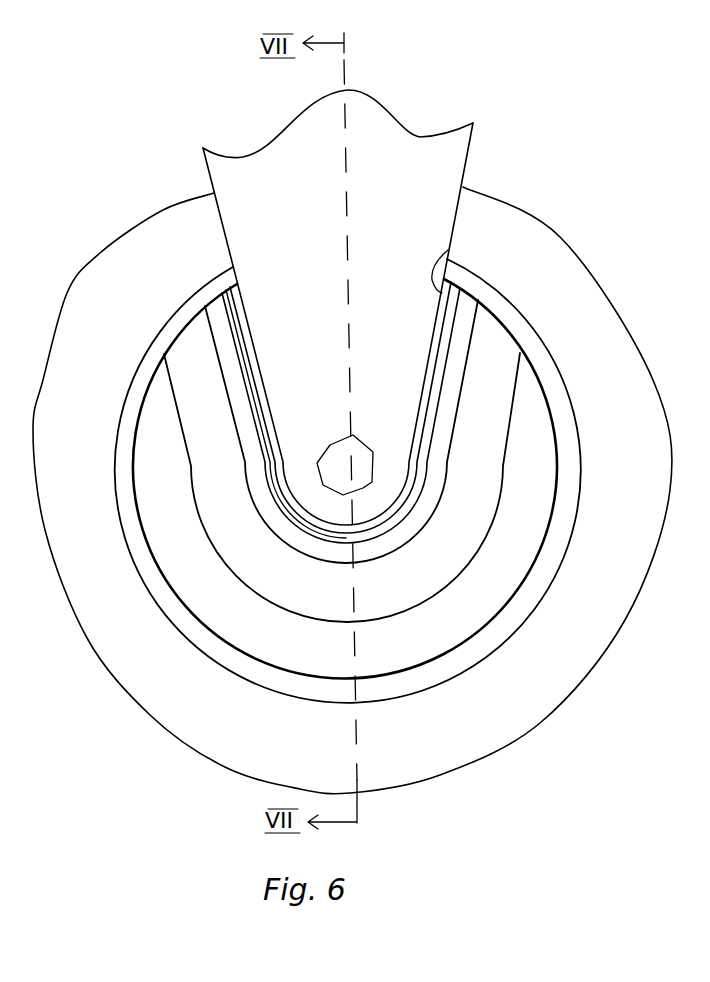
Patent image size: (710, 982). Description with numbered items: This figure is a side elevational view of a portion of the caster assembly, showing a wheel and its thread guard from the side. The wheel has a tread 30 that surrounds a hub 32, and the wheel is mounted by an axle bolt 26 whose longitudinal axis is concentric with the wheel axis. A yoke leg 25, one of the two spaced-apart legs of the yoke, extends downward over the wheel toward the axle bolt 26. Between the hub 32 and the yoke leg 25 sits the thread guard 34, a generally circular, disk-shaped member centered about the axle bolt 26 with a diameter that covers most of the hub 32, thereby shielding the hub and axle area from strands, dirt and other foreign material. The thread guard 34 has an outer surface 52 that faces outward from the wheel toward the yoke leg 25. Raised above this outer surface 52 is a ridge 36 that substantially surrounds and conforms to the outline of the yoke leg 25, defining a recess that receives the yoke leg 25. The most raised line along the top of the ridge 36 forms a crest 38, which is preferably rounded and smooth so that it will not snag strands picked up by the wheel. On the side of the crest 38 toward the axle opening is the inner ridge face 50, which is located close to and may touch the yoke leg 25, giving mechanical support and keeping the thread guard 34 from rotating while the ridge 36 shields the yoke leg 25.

The yoke leg 25 is at (222, 170).
The axle bolt 26 is at (330, 445).
The tread 30 is at (577, 300).
The hub 32 is at (485, 297).
The thread guard 34 is at (183, 563).
The ridge 36 is at (193, 360).
The crest 38 is at (220, 283).
The inner ridge face 50 is at (448, 250).
The outer surface 52 is at (228, 605).